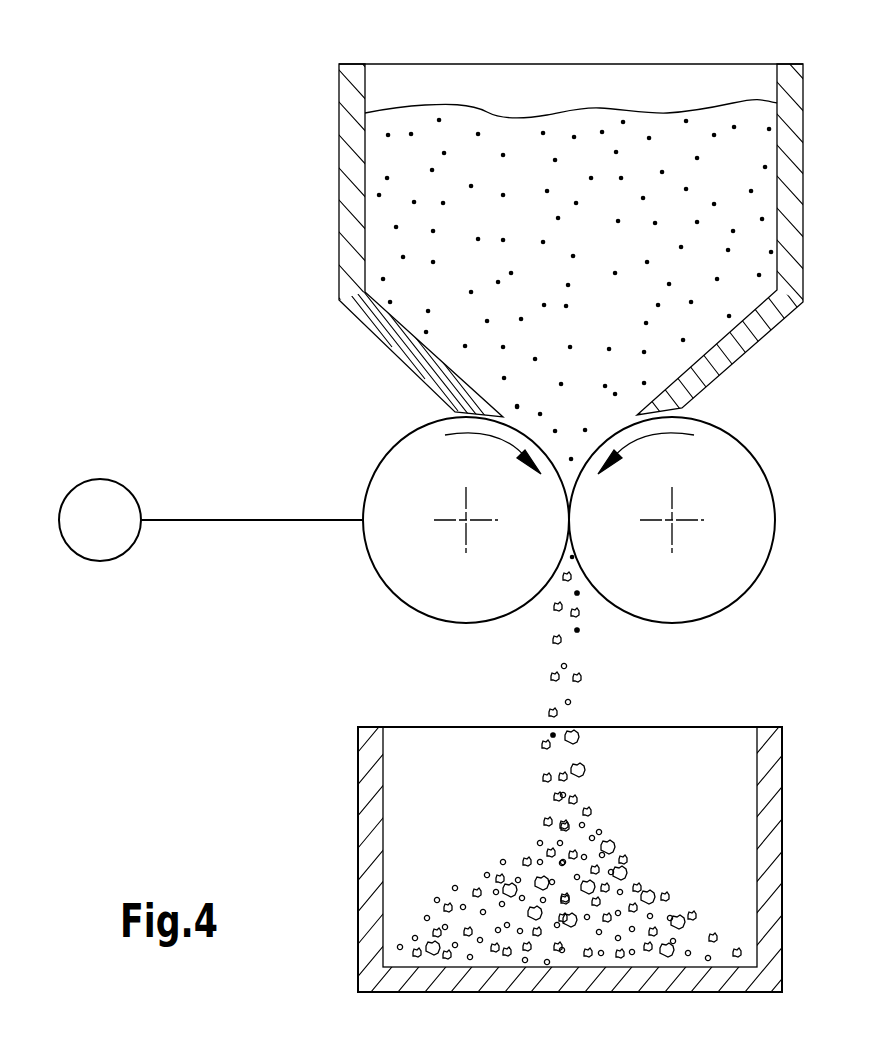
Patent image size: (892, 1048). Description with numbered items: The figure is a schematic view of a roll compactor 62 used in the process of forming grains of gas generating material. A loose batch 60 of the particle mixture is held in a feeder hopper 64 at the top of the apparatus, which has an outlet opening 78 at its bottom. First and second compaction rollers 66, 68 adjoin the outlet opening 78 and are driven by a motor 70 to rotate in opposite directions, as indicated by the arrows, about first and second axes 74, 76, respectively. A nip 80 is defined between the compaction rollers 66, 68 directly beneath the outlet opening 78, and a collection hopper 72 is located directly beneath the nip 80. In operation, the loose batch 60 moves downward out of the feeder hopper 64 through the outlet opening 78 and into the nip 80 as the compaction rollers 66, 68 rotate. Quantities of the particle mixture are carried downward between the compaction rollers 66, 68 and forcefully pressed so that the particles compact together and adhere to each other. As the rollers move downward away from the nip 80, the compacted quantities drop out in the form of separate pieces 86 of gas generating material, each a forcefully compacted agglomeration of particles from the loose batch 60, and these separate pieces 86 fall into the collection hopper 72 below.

The loose batch 60 is at (473, 162).
The roll compactor 62 is at (318, 127).
The feeder hopper 64 is at (398, 63).
The first compaction roller 66 is at (403, 470).
The second compaction roller 68 is at (733, 463).
The motor 70 is at (88, 480).
The collection hopper 72 is at (358, 795).
The first axis 74 is at (466, 520).
The second axis 76 is at (672, 520).
The outlet opening 78 is at (576, 402).
The nip 80 is at (565, 600).
The separate pieces 86 is at (555, 713).